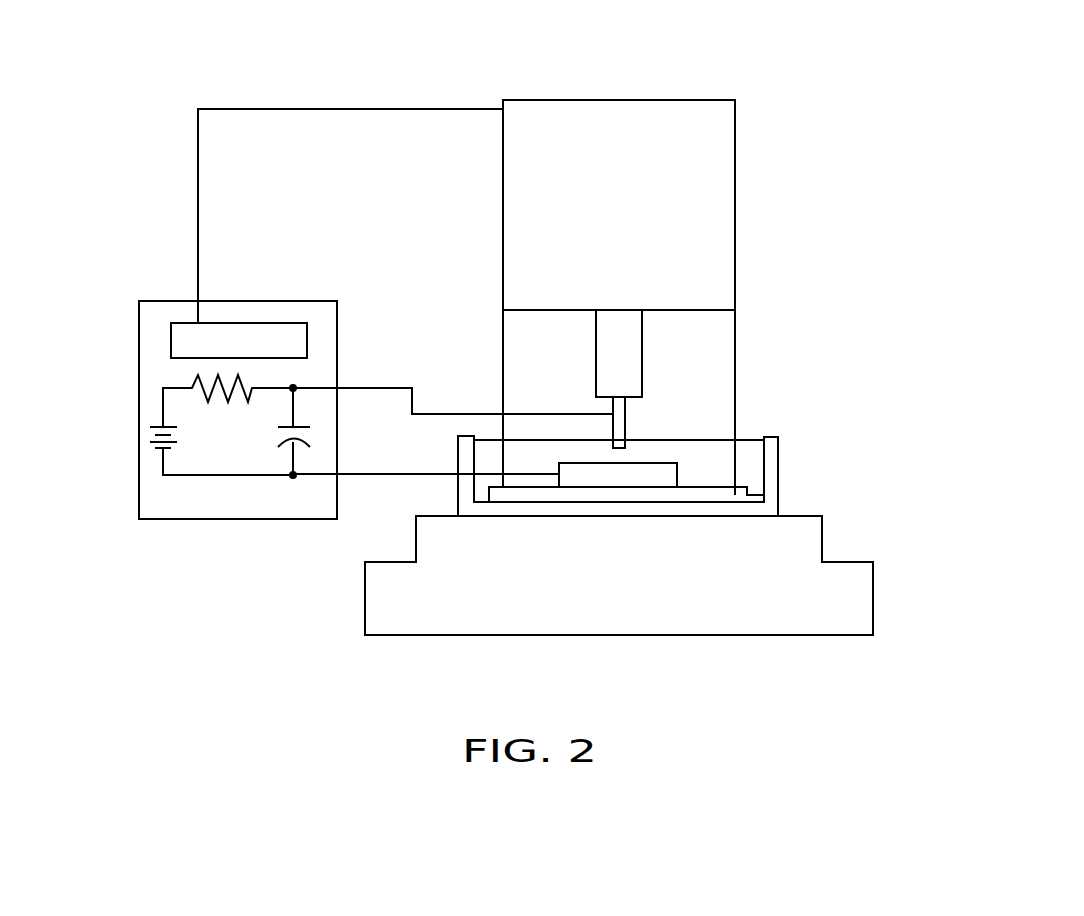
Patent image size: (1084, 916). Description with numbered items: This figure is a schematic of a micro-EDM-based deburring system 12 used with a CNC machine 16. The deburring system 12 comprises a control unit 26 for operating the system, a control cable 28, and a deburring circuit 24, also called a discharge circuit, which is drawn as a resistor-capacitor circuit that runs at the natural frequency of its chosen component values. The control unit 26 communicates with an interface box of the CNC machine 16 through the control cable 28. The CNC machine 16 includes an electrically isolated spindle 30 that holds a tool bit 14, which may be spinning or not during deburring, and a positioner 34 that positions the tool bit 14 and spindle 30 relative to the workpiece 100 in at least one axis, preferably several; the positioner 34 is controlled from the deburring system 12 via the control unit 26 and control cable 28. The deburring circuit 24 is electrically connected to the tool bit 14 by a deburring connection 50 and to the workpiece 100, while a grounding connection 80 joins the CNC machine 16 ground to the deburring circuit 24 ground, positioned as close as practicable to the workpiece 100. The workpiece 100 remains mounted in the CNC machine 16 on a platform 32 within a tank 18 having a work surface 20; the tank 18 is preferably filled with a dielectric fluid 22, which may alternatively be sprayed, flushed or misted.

The µEDM-based deburring system 12 is at (158, 509).
The tool bit 14 is at (627, 417).
The CNC machine 16 is at (710, 207).
The tank 18 is at (779, 460).
The work surface 20 is at (779, 496).
The dielectric fluid 22 is at (745, 452).
The deburring circuit 24 is at (237, 475).
The control unit 26 is at (170, 338).
The control cable 28 is at (355, 109).
The electrically isolated spindle 30 is at (642, 355).
The platform 32 is at (822, 543).
The positioner 34 is at (712, 288).
The deburring connection 50 is at (402, 390).
The grounding connection 80 is at (385, 477).
The workpiece 100 is at (559, 463).